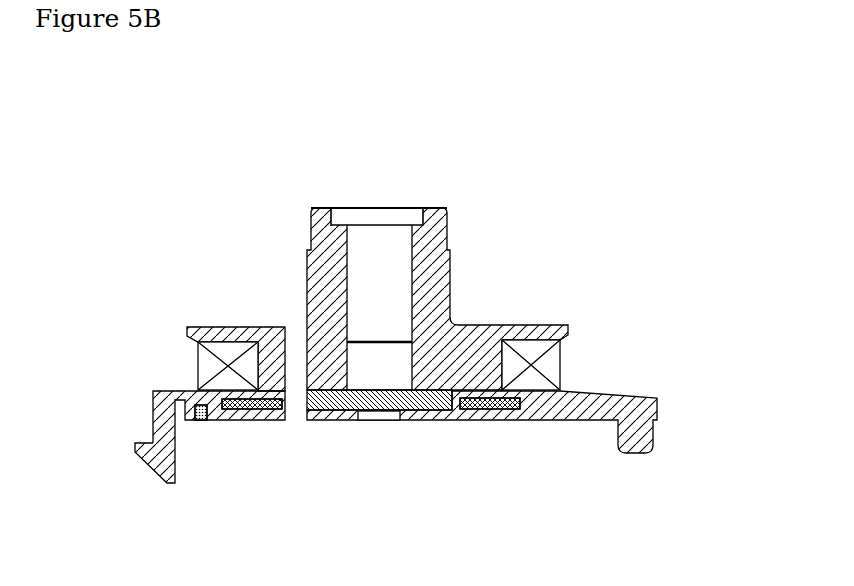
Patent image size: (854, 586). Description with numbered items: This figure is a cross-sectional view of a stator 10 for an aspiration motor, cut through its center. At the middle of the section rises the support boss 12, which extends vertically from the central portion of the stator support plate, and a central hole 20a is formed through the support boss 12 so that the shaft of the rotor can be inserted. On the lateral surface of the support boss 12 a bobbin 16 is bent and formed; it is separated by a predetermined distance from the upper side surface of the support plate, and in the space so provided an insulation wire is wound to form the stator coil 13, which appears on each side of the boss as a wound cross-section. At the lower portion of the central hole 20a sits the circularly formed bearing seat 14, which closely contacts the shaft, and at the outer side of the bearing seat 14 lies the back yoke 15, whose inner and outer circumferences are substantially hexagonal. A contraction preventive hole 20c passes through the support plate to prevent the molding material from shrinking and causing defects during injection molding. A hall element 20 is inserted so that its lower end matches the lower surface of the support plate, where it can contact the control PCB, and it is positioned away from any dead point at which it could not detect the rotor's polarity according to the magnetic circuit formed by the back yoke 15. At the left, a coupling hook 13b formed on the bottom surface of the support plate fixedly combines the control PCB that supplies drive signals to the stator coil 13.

The stator 10 is at (513, 190).
The support boss 12 is at (438, 247).
The stator coil 13 is at (552, 362).
The coupling hook 13b is at (150, 458).
The bearing seat 14 is at (340, 405).
The back yoke 15 is at (257, 420).
The bobbin 16 is at (543, 325).
The hall element 20 is at (202, 420).
The central hole 20a is at (383, 246).
The contraction preventive hole 20c is at (291, 334).